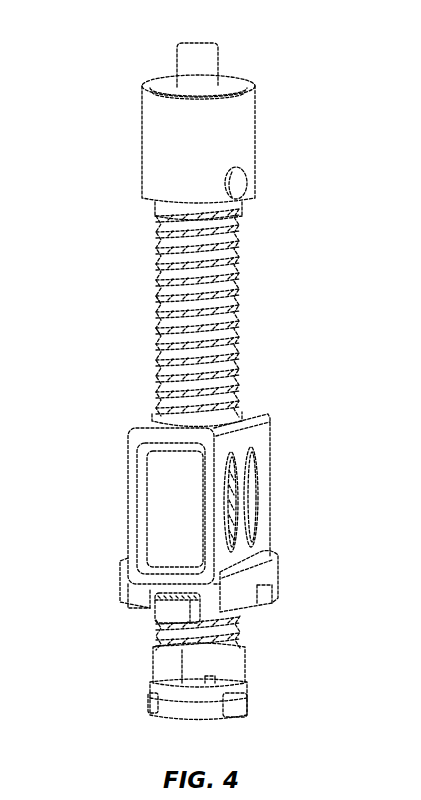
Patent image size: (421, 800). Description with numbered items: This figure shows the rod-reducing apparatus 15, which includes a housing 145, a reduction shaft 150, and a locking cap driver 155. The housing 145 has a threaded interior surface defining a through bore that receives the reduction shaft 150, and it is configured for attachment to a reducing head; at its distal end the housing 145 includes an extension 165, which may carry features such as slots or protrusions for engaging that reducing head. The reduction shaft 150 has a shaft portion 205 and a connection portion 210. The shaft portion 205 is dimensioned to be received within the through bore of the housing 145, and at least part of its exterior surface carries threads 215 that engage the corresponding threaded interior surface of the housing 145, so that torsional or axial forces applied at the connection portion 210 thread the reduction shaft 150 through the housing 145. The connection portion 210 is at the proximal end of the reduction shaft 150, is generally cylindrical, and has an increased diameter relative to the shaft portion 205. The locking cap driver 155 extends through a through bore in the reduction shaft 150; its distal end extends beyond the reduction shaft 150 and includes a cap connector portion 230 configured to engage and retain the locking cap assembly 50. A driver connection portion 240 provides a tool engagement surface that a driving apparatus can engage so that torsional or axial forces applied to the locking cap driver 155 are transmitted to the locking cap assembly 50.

The rod-reducing apparatus 15 is at (104, 158).
The locking cap assembly 50 is at (245, 722).
The housing 145 is at (270, 458).
The reduction shaft 150 is at (245, 279).
The locking cap driver 155 is at (222, 67).
The extension 165 is at (173, 613).
The shaft portion 205 is at (157, 328).
The connection portion 210 is at (255, 140).
The threads 215 is at (157, 295).
The cap connector portion 230 is at (243, 660).
The driver connection portion 240 is at (188, 46).